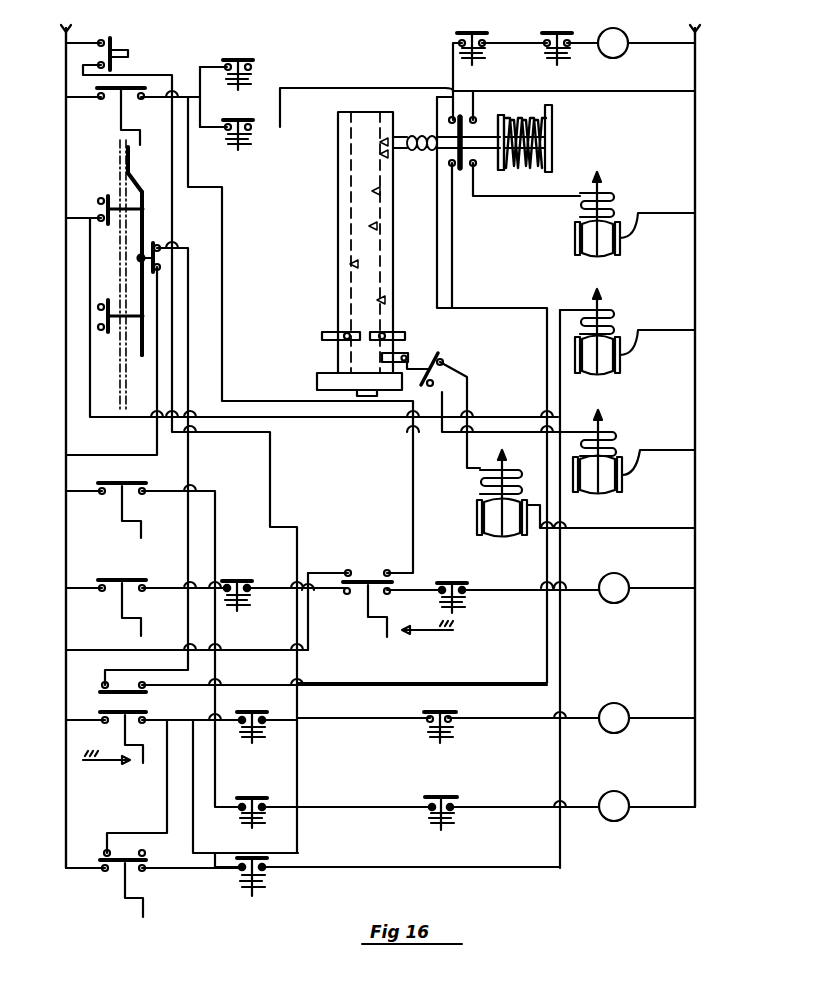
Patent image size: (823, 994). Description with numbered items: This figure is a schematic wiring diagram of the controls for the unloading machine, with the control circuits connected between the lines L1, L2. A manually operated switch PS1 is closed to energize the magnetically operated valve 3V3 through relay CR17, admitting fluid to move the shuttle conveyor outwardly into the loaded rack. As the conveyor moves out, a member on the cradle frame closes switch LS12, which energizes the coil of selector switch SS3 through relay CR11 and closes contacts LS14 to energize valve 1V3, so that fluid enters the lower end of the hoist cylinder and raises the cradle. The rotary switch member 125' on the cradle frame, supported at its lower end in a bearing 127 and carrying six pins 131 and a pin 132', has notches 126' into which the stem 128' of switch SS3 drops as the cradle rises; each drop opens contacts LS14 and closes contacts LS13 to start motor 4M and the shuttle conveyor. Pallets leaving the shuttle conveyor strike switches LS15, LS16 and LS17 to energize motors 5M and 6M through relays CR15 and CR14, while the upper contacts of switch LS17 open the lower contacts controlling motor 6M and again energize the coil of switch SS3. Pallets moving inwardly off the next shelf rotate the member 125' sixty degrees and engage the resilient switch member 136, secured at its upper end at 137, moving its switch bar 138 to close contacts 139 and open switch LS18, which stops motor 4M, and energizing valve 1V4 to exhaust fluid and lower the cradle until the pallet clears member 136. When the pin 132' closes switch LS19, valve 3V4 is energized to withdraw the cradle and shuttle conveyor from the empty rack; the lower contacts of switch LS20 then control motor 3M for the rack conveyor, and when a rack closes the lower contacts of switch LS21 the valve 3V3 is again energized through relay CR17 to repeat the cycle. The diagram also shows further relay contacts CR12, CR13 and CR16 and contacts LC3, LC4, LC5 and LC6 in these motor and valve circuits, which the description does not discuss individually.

The power line L1 is at (63, 436).
The power line L2 is at (695, 405).
The manually operated switch PS1 is at (113, 55).
The switch LS12 is at (104, 100).
The contacts LS13 is at (452, 166).
The contacts LS14 is at (476, 118).
The switch LS15 is at (122, 500).
The switch LS16 is at (122, 595).
The switch LS17 is at (362, 596).
The switch LS18 is at (160, 248).
The switch LS19 is at (450, 360).
The switch LS20 is at (141, 712).
The switch LS21 is at (120, 870).
The relay CR11 is at (246, 61).
The control relay contact CR12 is at (246, 122).
The control relay contact CR13 is at (493, 56).
The relay CR14 is at (247, 584).
The relay CR15 is at (261, 802).
The control relay contact CR16 is at (254, 718).
The relay CR17 is at (254, 866).
The line contactor LC3 is at (438, 711).
The line contactor LC4 is at (540, 63).
The line contactor LC5 is at (444, 786).
The line contactor LC6 is at (452, 580).
The motor 4M is at (608, 56).
The motor 6M is at (626, 580).
The motor 3M is at (626, 712).
The motor 5M is at (626, 799).
The magnetically operated valve 1V3 is at (624, 214).
The magnetically operated valve 1V4 is at (626, 332).
The magnetically operated valve 3V3 is at (623, 452).
The magnetically operated valve 3V4 is at (477, 525).
The rotary switch member 125' is at (392, 242).
The depressions 126' is at (391, 147).
The bearing 127 is at (317, 382).
The stem 128' is at (558, 138).
The pins 131 is at (322, 334).
The pin 132' is at (420, 337).
The resilient yieldable switch member 136 is at (143, 216).
The securing point 137 is at (130, 166).
The switch bar 138 is at (108, 196).
The contacts 139 is at (98, 202).
The selector switch SS3 is at (498, 172).